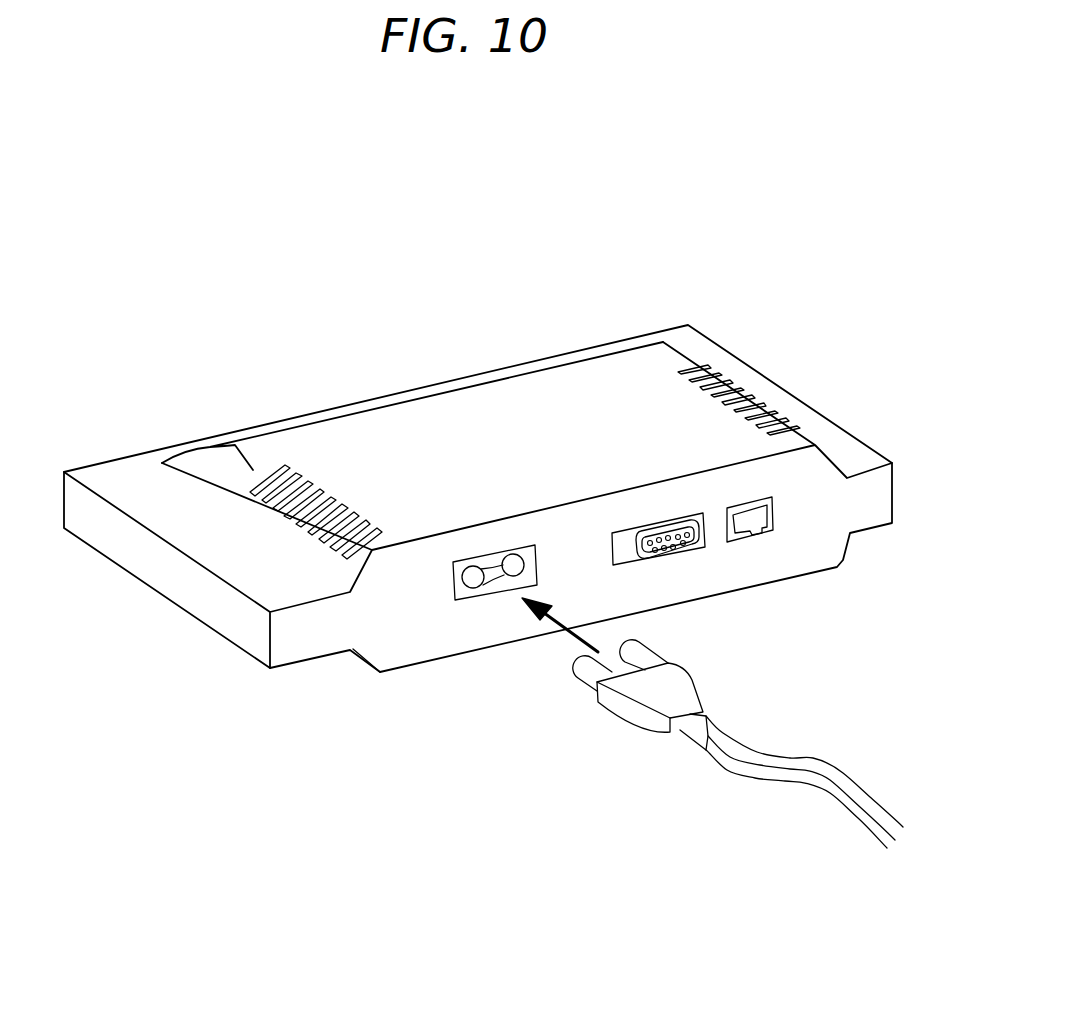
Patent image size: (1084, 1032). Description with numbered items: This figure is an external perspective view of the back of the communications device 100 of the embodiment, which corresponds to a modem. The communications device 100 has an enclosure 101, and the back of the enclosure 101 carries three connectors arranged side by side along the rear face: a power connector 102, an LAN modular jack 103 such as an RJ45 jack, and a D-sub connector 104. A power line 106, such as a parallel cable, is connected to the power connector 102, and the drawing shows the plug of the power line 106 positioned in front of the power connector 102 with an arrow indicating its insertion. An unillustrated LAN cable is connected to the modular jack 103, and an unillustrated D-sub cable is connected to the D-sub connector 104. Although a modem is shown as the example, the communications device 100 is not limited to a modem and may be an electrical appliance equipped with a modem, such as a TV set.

The communications device 100 is at (436, 360).
The enclosure 101 is at (211, 435).
The power connector 102 is at (490, 592).
The LAN modular jack 103 is at (762, 533).
The D-sub connector 104 is at (695, 555).
The power line 106 is at (703, 750).